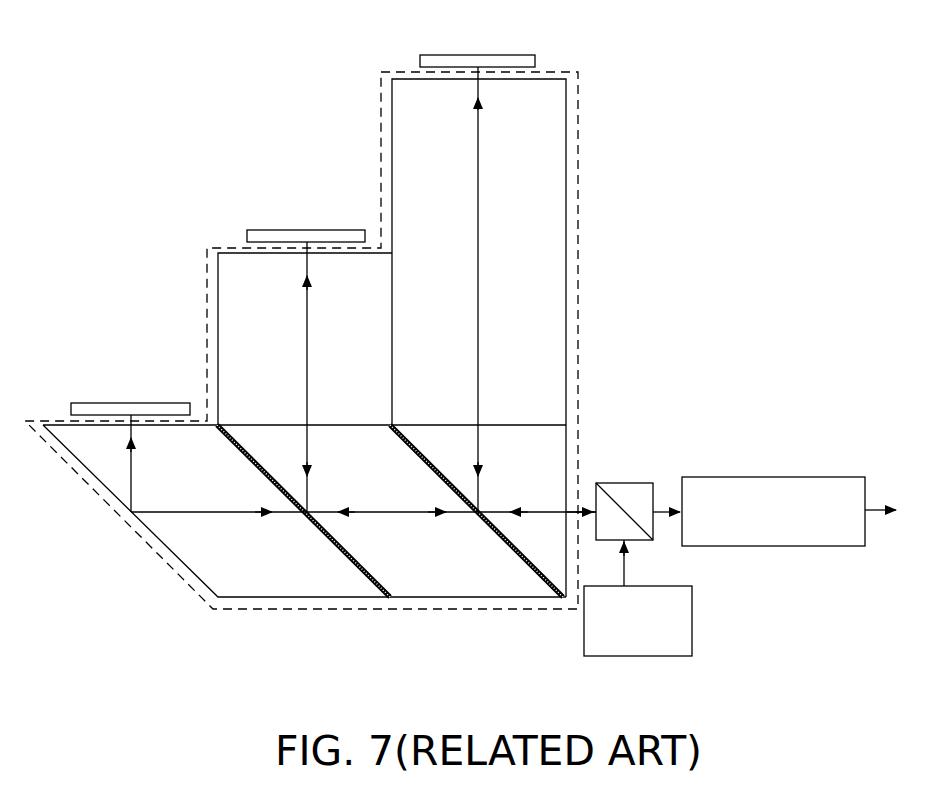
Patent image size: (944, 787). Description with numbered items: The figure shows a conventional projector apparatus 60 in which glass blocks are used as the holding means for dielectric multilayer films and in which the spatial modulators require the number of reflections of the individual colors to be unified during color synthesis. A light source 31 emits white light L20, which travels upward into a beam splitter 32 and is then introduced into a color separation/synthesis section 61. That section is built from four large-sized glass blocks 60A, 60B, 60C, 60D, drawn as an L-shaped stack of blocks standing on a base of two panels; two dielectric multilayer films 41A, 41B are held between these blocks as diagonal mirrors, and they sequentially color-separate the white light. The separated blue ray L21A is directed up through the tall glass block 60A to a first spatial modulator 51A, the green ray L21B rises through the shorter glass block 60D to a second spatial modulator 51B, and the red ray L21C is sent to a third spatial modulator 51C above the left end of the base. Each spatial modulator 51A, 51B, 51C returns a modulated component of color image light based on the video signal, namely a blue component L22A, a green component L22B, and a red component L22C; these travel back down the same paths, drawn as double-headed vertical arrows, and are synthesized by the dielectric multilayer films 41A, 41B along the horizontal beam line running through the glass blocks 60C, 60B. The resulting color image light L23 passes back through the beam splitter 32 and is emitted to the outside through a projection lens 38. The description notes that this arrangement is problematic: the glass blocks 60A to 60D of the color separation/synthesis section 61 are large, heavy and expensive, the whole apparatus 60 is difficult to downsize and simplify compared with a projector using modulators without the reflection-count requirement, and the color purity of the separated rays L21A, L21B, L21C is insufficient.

The spatial modulator 51A is at (510, 55).
The spatial modulator 51B is at (295, 229).
The spatial modulator 51C is at (118, 403).
The color separation/synthesis section 61 is at (580, 72).
The projector apparatus 60 is at (851, 606).
The glass block 60A is at (566, 295).
The glass block 60B is at (455, 597).
The glass block 60C is at (292, 597).
The glass block 60D is at (218, 325).
The dielectric multilayer film 41A is at (553, 597).
The dielectric multilayer film 41B is at (374, 597).
The beam splitter 32 is at (638, 483).
The light source 31 is at (692, 606).
The projection lens 38 is at (758, 477).
The white light L20 is at (626, 570).
The color image light L23 is at (870, 495).
The blue ray L21A is at (596, 289).
The blue component L22A is at (480, 186).
The green ray L21B is at (203, 366).
The green component L22B is at (307, 313).
The red ray L21C is at (308, 489).
The red component L22C is at (131, 487).